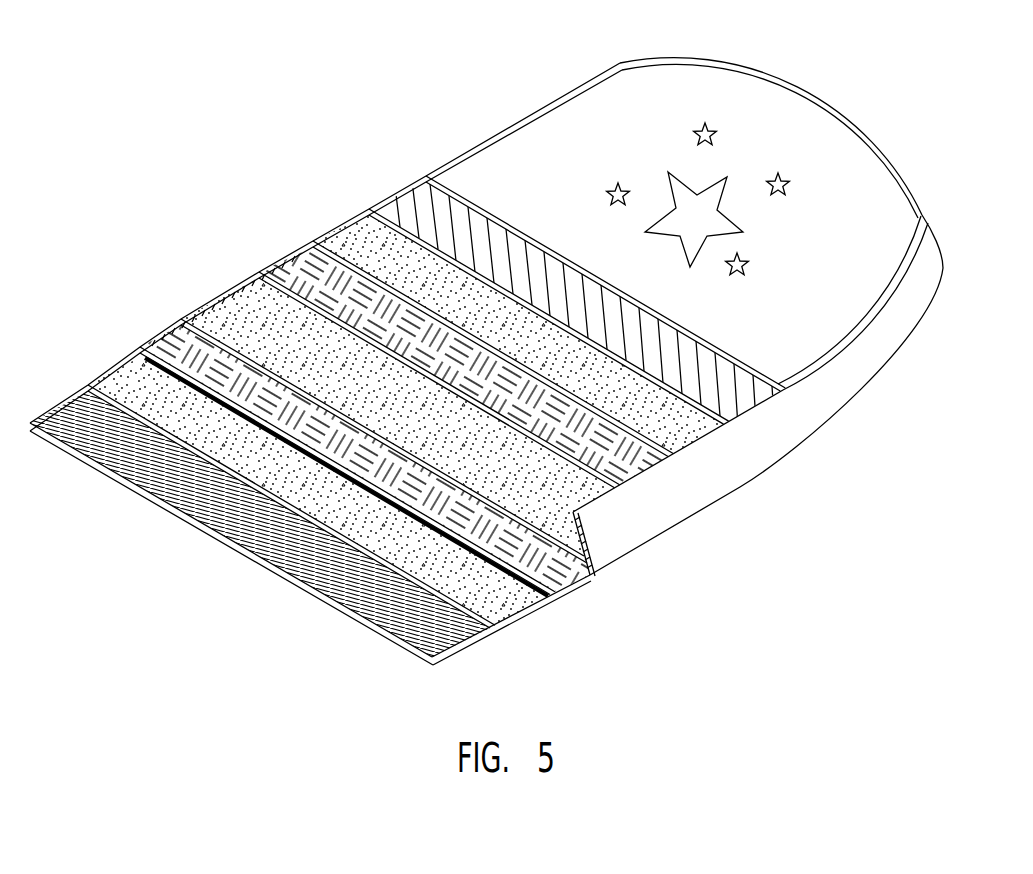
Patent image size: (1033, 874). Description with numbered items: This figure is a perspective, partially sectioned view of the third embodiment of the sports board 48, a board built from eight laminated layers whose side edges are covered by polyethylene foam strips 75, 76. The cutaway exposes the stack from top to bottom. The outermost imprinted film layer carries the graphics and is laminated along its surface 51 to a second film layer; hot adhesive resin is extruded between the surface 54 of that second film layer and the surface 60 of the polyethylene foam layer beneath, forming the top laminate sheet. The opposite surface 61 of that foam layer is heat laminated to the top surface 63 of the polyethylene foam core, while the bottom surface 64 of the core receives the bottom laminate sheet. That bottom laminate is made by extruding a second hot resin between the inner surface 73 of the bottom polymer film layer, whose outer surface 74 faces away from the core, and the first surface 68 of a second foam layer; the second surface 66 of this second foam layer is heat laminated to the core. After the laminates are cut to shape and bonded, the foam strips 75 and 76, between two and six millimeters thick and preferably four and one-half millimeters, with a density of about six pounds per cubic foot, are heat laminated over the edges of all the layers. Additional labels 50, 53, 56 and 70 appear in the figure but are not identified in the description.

The sports board 48 is at (483, 82).
The cover layer 50 is at (640, 274).
The surface of imprinted film layer 51 is at (448, 197).
The foam layer 53 is at (687, 371).
The surface of second film layer 54 is at (405, 235).
The first adhesive layer 56 is at (613, 391).
The first outer surface of foam layer 60 is at (620, 454).
The second outer surface of foam layer 61 is at (298, 285).
The top surface of foam core 63 is at (575, 484).
The bottom surface of foam core 64 is at (208, 328).
The second outer surface of second foam layer 66 is at (513, 544).
The first outer surface of second foam layer 68 is at (159, 352).
The third adhesive layer 70 is at (450, 566).
The inner surface of second polymer film layer 73 is at (420, 617).
The outer surface of second polymer film layer 74 is at (45, 444).
The polyethylene foam strip 75 is at (473, 153).
The polyethylene foam strip 76 is at (749, 413).